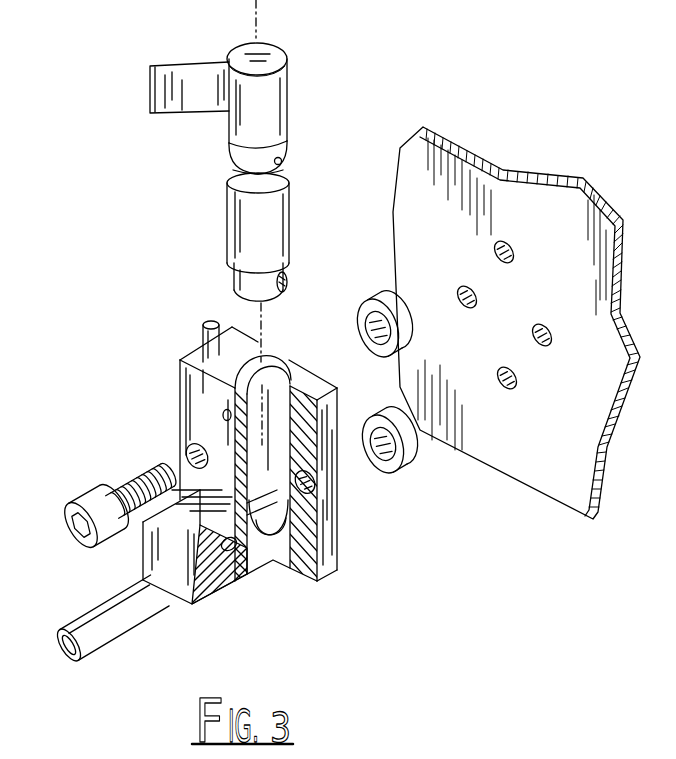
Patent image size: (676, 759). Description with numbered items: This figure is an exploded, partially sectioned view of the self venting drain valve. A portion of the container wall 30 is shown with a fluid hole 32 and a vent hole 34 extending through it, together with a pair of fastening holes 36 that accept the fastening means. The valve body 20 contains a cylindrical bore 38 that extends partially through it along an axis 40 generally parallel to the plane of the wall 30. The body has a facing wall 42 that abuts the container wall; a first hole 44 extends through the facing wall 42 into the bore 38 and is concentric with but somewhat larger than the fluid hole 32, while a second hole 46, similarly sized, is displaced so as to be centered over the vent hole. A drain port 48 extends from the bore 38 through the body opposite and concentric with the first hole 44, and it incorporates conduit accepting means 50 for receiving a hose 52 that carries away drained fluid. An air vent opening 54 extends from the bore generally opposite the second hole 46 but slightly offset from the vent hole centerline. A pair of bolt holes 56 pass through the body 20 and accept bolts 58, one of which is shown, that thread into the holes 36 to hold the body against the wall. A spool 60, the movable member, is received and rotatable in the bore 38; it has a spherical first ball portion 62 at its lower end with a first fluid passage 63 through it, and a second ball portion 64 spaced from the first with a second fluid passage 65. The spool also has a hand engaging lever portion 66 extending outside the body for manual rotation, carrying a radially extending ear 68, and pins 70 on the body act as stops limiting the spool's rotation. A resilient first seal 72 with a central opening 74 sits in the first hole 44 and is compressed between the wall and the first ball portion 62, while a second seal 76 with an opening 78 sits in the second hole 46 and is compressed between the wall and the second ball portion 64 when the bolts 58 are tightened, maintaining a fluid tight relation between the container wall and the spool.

The valve body 20 is at (322, 583).
The wall 30 is at (516, 323).
The fluid hole 32 is at (503, 388).
The vent hole 34 is at (502, 237).
The fastening holes 36 is at (543, 326).
The cylindrical bore 38 is at (262, 448).
The axis 40 is at (263, 326).
The facing wall 42 is at (303, 363).
The first hole 44 is at (281, 548).
The second hole 46 is at (283, 410).
The drain port 48 is at (243, 575).
The conduit accepting means 50 is at (183, 600).
The hose 52 is at (92, 607).
The air vent opening 54 is at (222, 413).
The bolt holes 56 is at (186, 451).
The bolts 58 is at (140, 483).
The spool 60 is at (288, 193).
The first ball portion 62 is at (233, 285).
The first fluid passage 63 is at (291, 266).
The second ball portion 64 is at (298, 148).
The second fluid passage 65 is at (288, 156).
The hand engaging lever portion 66 is at (286, 78).
The ear 68 is at (178, 63).
The pins 70 is at (206, 337).
The first seal 72 is at (402, 477).
The opening 74 is at (413, 463).
The second seal 76 is at (390, 298).
The opening 78 is at (363, 327).